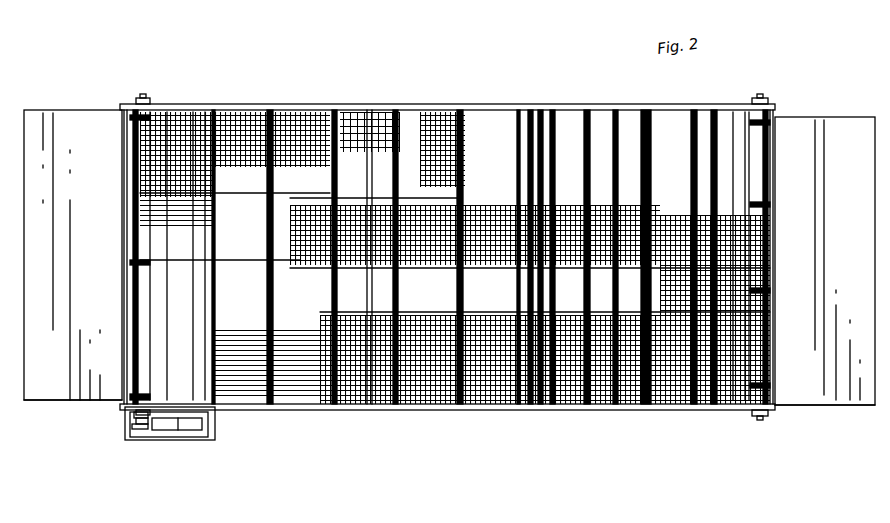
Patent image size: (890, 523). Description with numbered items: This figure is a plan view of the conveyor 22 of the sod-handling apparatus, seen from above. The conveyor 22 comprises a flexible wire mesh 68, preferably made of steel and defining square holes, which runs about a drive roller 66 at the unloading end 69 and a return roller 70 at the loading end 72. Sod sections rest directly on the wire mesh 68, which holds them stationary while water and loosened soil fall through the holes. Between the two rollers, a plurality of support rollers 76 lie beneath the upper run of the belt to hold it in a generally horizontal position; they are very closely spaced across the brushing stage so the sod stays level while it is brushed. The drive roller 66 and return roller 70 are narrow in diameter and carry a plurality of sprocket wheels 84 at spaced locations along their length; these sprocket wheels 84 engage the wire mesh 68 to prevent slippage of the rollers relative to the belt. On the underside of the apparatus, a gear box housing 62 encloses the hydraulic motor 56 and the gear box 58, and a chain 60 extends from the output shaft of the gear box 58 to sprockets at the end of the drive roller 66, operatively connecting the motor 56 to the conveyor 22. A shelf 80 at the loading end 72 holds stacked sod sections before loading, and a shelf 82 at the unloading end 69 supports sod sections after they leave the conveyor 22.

The conveyor 22 is at (162, 104).
The hydraulic motor 56 is at (196, 440).
The gear box 58 is at (165, 440).
The chain 60 is at (146, 440).
The gear box housing 62 is at (215, 428).
The drive roller 66 is at (135, 318).
The wire mesh 68 is at (310, 112).
The unloading end 69 is at (24, 400).
The return roller 70 is at (768, 247).
The loading end 72 is at (875, 405).
The support rollers 76 is at (214, 110).
The shelf 80 is at (845, 117).
The shelf 82 is at (72, 120).
The sprocket wheels 84 is at (136, 118).